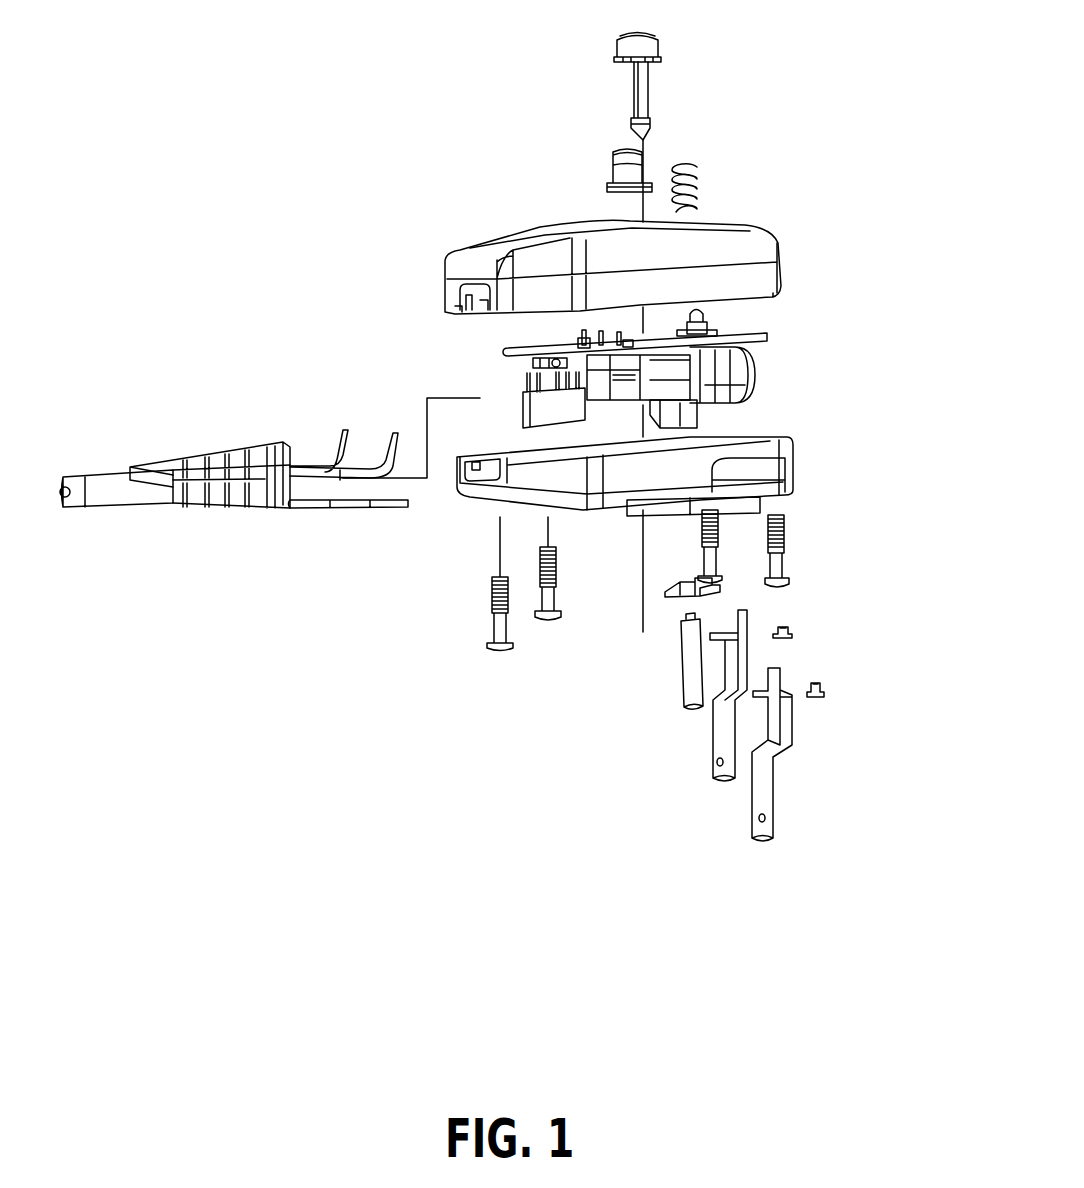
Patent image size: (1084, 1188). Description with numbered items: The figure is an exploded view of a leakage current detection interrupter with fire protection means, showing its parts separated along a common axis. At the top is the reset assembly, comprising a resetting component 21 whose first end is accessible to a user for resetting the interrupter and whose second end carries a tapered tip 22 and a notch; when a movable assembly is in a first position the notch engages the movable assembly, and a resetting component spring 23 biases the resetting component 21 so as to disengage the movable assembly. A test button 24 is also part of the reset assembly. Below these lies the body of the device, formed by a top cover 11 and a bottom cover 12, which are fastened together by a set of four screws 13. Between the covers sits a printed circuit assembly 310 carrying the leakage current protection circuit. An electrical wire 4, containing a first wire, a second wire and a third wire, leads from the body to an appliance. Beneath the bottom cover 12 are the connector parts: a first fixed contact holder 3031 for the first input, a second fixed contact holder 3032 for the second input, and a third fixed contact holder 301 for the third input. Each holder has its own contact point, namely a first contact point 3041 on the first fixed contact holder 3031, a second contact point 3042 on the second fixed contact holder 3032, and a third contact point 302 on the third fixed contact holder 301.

The resetting component 21 is at (649, 46).
The tapered tip 22 is at (652, 118).
The resetting component spring 23 is at (698, 192).
The test button 24 is at (612, 163).
The top cover 11 is at (455, 263).
The bottom cover 12 is at (788, 477).
The screws 13 is at (517, 648).
The electrical wire 4 is at (193, 450).
The printed circuit assembly 310 is at (760, 337).
The third contact point 302 is at (672, 603).
The third fixed contact holder 301 is at (680, 705).
The first fixed contact holder 3031 is at (717, 782).
The second fixed contact holder 3032 is at (752, 808).
The first contact point 3041 is at (789, 628).
The second contact point 3042 is at (821, 684).